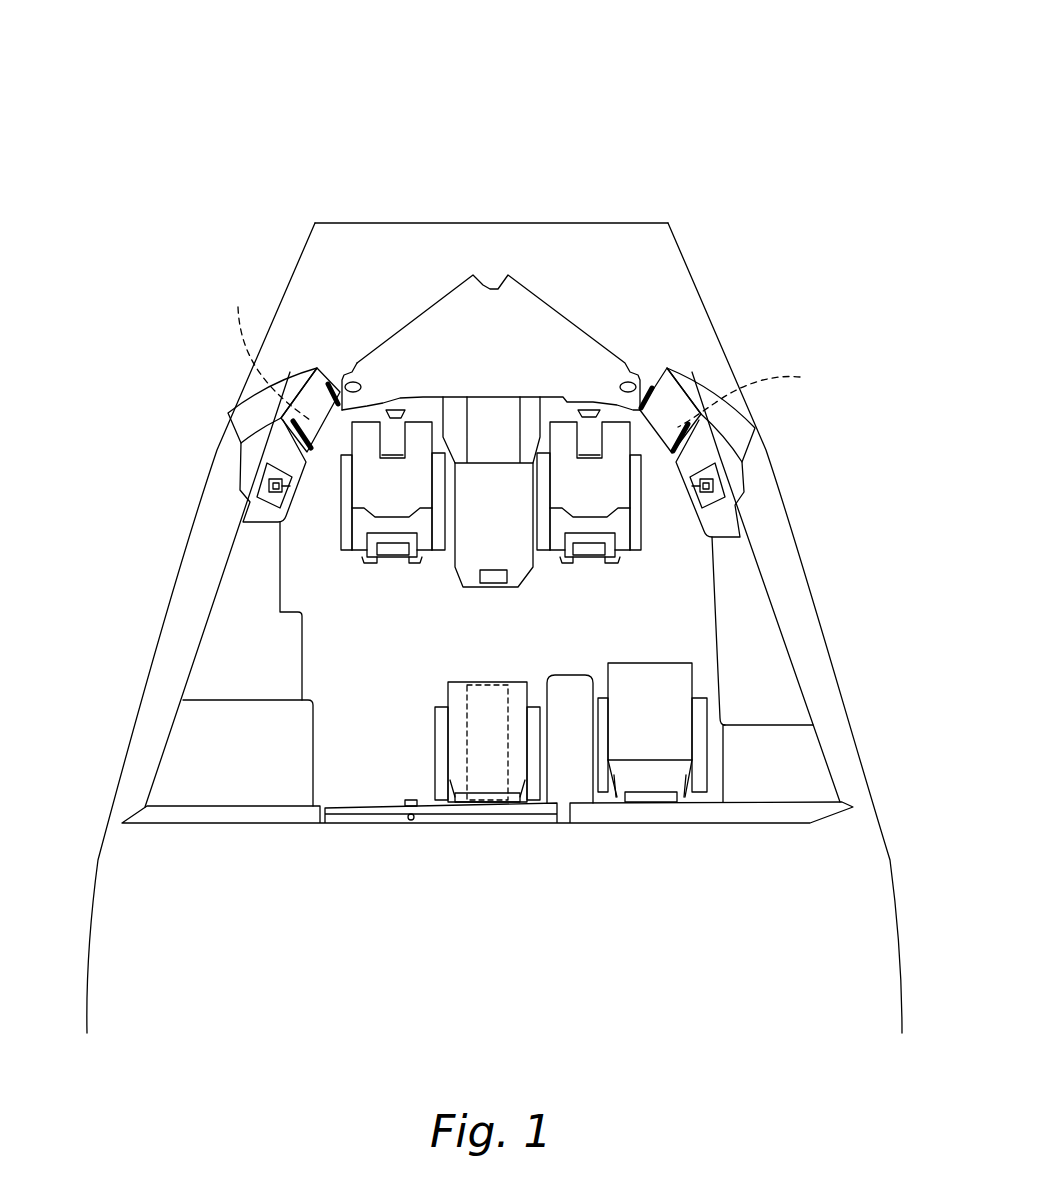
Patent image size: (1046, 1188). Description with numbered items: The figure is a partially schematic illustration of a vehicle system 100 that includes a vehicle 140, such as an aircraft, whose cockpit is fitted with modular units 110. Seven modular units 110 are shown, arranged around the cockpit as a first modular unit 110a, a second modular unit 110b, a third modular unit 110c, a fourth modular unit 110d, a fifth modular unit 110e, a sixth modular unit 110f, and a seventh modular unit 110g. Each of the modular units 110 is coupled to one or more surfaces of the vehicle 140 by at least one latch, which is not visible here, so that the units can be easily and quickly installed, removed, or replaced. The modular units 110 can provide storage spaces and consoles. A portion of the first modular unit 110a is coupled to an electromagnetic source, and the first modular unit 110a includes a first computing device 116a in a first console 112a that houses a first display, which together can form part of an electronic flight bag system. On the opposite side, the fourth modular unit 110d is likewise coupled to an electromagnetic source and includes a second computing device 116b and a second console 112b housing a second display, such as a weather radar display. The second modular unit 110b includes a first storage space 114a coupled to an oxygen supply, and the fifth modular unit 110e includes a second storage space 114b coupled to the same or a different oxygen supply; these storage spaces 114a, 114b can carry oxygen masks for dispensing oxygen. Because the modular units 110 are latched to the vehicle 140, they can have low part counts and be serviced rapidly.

The vehicle system 100 is at (397, 56).
The modular units 110 is at (178, 263).
The first modular unit 110a is at (287, 427).
The second modular unit 110b is at (252, 511).
The third modular unit 110c is at (198, 750).
The fourth modular unit 110d is at (707, 422).
The fifth modular unit 110e is at (733, 520).
The sixth modular unit 110f is at (798, 768).
The seventh modular unit 110g is at (574, 778).
The first console 112a is at (326, 374).
The second console 112b is at (662, 408).
The first storage space 114a is at (273, 462).
The second storage space 114b is at (722, 473).
The first computing device 116a is at (264, 347).
The second computing device 116b is at (766, 395).
The vehicle 140 is at (572, 224).